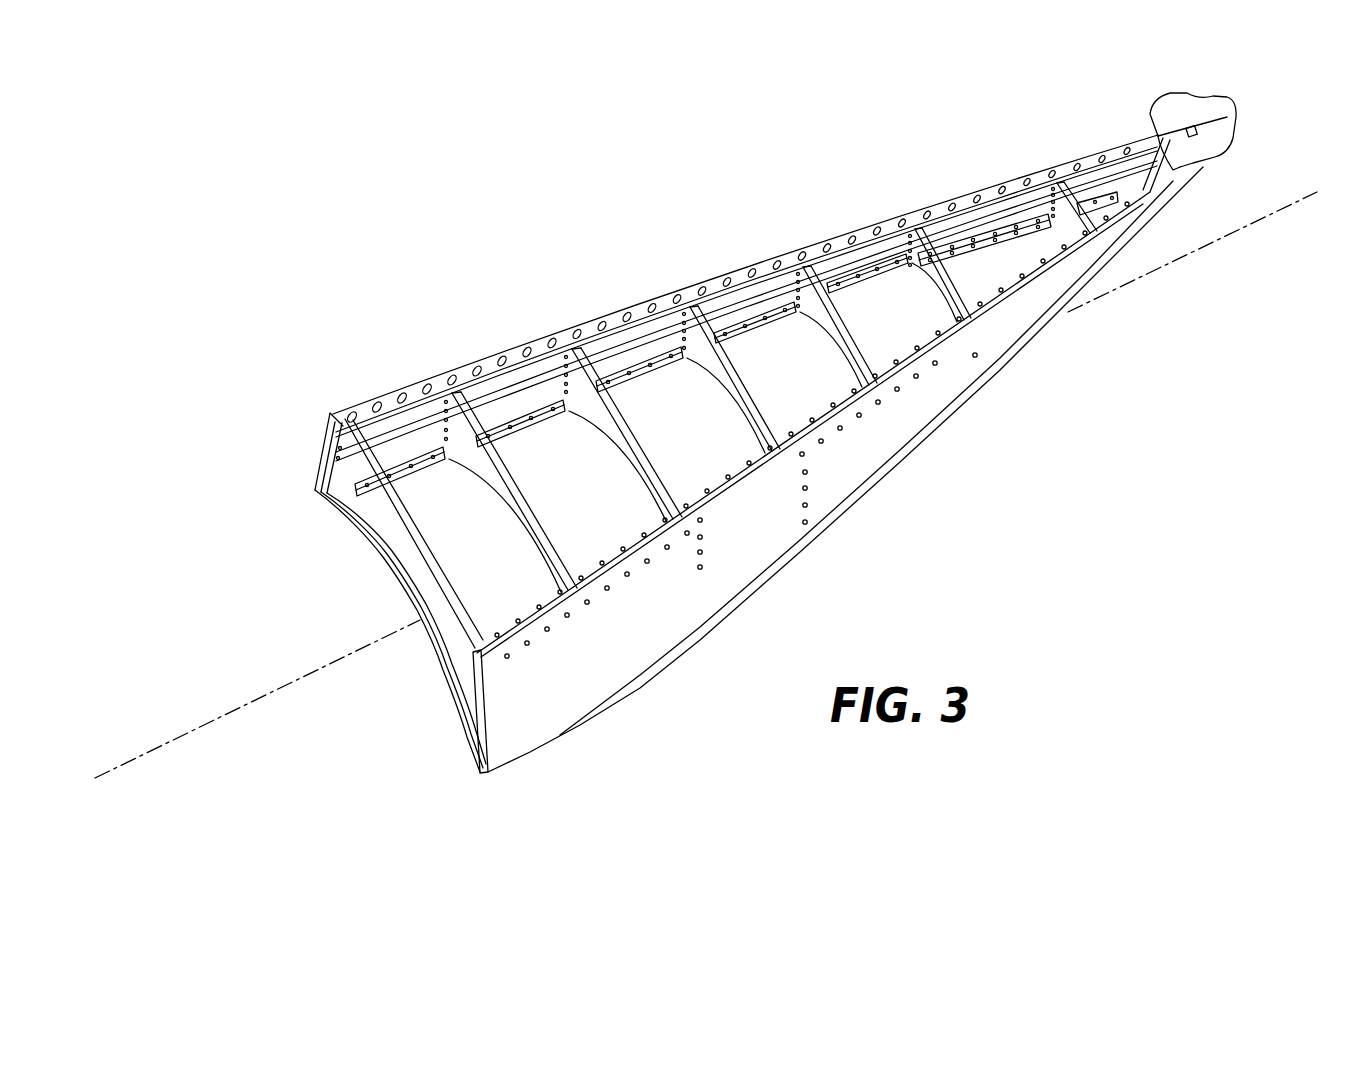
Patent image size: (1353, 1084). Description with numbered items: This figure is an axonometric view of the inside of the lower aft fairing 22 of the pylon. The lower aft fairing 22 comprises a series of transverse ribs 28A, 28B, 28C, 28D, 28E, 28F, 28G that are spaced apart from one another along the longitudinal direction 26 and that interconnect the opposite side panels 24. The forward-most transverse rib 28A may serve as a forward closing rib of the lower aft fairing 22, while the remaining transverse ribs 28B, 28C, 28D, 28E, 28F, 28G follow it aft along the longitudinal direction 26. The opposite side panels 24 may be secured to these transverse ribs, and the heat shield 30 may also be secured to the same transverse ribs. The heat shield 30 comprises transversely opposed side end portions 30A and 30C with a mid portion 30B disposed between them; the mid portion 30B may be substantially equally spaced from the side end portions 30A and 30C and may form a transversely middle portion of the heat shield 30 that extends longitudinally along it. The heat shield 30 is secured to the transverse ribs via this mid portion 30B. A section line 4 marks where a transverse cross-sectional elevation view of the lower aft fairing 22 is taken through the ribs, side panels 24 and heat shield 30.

The lower aft fairing 22 is at (346, 204).
The opposite side panels 24 is at (716, 284).
The longitudinal direction 26 is at (143, 757).
The transverse rib 28A is at (357, 466).
The transverse rib 28B is at (453, 396).
The transverse rib 28C is at (583, 387).
The transverse rib 28D is at (700, 343).
The transverse rib 28E is at (813, 300).
The transverse rib 28F is at (920, 253).
The transverse rib 28G is at (1058, 210).
The heat shield 30 is at (594, 508).
The side end portion 30A is at (322, 508).
The mid portion 30B is at (411, 654).
The side end portion 30C is at (452, 774).
The line 4- 4 is at (353, 300).